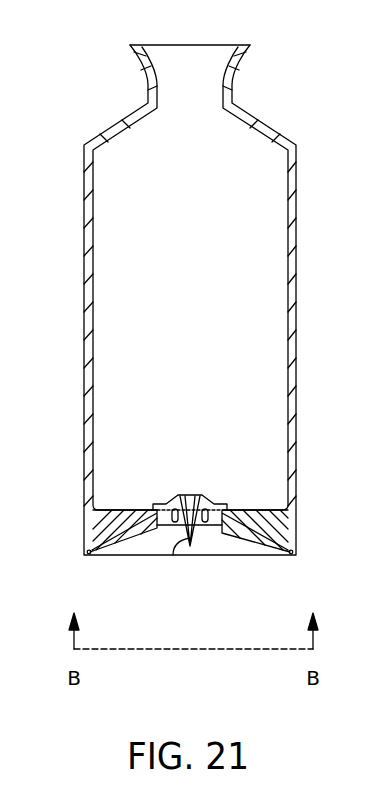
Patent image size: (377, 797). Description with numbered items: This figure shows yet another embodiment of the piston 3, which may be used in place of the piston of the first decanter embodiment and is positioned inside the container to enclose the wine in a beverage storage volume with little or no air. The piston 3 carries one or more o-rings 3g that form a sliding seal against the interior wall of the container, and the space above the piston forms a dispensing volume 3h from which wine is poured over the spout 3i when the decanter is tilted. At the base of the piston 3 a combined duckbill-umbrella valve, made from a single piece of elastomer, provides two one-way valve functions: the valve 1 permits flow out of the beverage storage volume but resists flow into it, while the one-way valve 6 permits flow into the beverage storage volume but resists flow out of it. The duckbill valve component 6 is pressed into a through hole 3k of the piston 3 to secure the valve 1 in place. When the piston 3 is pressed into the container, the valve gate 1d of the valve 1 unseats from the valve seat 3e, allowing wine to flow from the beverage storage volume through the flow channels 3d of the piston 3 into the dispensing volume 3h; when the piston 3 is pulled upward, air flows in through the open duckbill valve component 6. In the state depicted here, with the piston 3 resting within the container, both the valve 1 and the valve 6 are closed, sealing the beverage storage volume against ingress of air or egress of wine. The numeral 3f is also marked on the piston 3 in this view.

The valve 1 is at (196, 420).
The valve gate 1d is at (170, 498).
The piston 3 is at (85, 292).
The flow channels 3d is at (212, 512).
The valve seat 3e is at (100, 534).
The bottom floor 3f is at (243, 538).
The o-rings 3g is at (292, 552).
The dispensing volume 3h is at (126, 357).
The spout 3i is at (130, 52).
The through hole 3k is at (188, 510).
The one-way valve (duckbill valve component) 6 is at (171, 558).